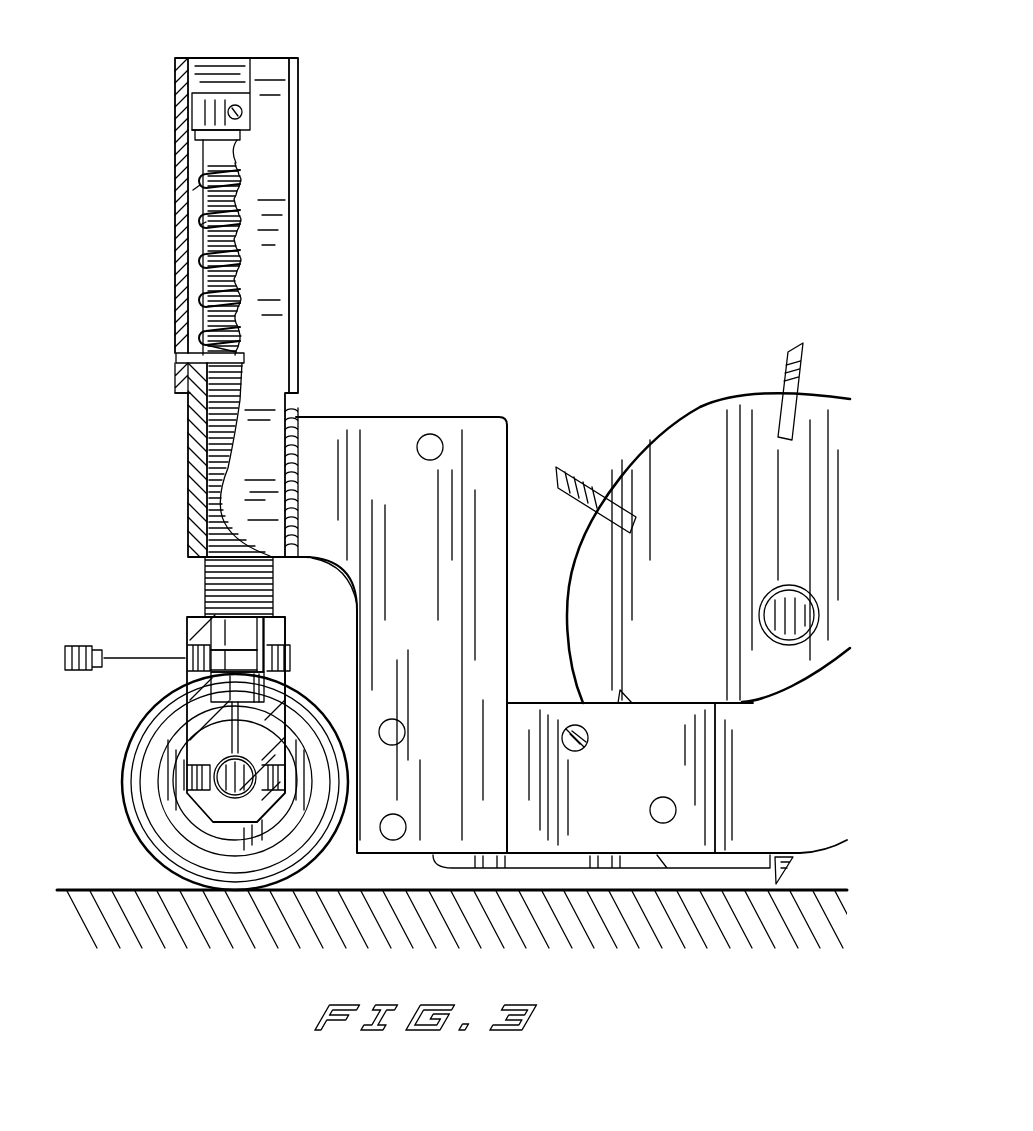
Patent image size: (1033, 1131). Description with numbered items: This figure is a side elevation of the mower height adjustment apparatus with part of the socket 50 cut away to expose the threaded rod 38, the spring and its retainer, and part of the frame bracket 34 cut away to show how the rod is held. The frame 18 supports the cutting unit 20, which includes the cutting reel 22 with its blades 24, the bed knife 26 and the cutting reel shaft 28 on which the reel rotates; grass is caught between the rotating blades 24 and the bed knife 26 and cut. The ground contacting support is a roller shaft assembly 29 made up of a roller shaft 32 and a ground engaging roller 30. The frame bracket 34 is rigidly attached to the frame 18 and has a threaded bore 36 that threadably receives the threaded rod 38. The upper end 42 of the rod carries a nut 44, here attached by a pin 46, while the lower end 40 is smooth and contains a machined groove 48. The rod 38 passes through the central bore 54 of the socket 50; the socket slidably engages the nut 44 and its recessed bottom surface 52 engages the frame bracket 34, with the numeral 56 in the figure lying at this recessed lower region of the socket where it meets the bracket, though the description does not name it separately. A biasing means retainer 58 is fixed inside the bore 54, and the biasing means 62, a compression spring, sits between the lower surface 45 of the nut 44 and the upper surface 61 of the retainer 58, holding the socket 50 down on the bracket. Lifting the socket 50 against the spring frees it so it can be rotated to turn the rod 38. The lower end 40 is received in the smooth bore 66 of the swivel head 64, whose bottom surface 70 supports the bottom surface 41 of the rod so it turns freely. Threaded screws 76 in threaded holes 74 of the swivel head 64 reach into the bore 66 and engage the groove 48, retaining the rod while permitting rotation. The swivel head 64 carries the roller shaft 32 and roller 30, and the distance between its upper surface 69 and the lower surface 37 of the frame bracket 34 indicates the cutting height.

The frame 18 is at (494, 655).
The cutting unit 20 is at (678, 596).
The cutting reel 22 is at (575, 545).
The blades 24 is at (797, 348).
The bed knife 26 is at (665, 870).
The cutting reel shaft 28 is at (790, 612).
The roller shaft assembly 29 is at (339, 870).
The ground engaging roller 30 is at (142, 842).
The roller shaft 32 is at (228, 780).
The frame bracket 34 is at (187, 462).
The threaded bore 36 is at (218, 500).
The lower surface of the frame bracket 37 is at (200, 572).
The threaded rod 38 is at (205, 312).
The lower end of the rod 40 is at (232, 630).
The bottom surface of the threaded rod 41 is at (232, 740).
The upper end of the rod 42 is at (226, 155).
The nut 44 is at (213, 100).
The lower surface of the nut 45 is at (200, 142).
The pin 46 is at (242, 112).
The machined groove 48 is at (236, 655).
The socket 50 is at (300, 183).
The bottom surface of the socket 52 is at (182, 376).
The central bore of the socket 54 is at (196, 193).
The collar lower face 56 is at (180, 396).
The biasing means retainer 58 is at (245, 360).
The upper surface of the biasing means retainer 61 is at (236, 350).
The biasing means 62 is at (201, 226).
The swivel head 64 is at (286, 640).
The smooth bore 66 is at (265, 692).
The upper surface of the swivel head 69 is at (285, 612).
The bottom surface of the bore 70 is at (215, 695).
The threaded holes 74 is at (195, 666).
The threaded screws 76 is at (84, 625).